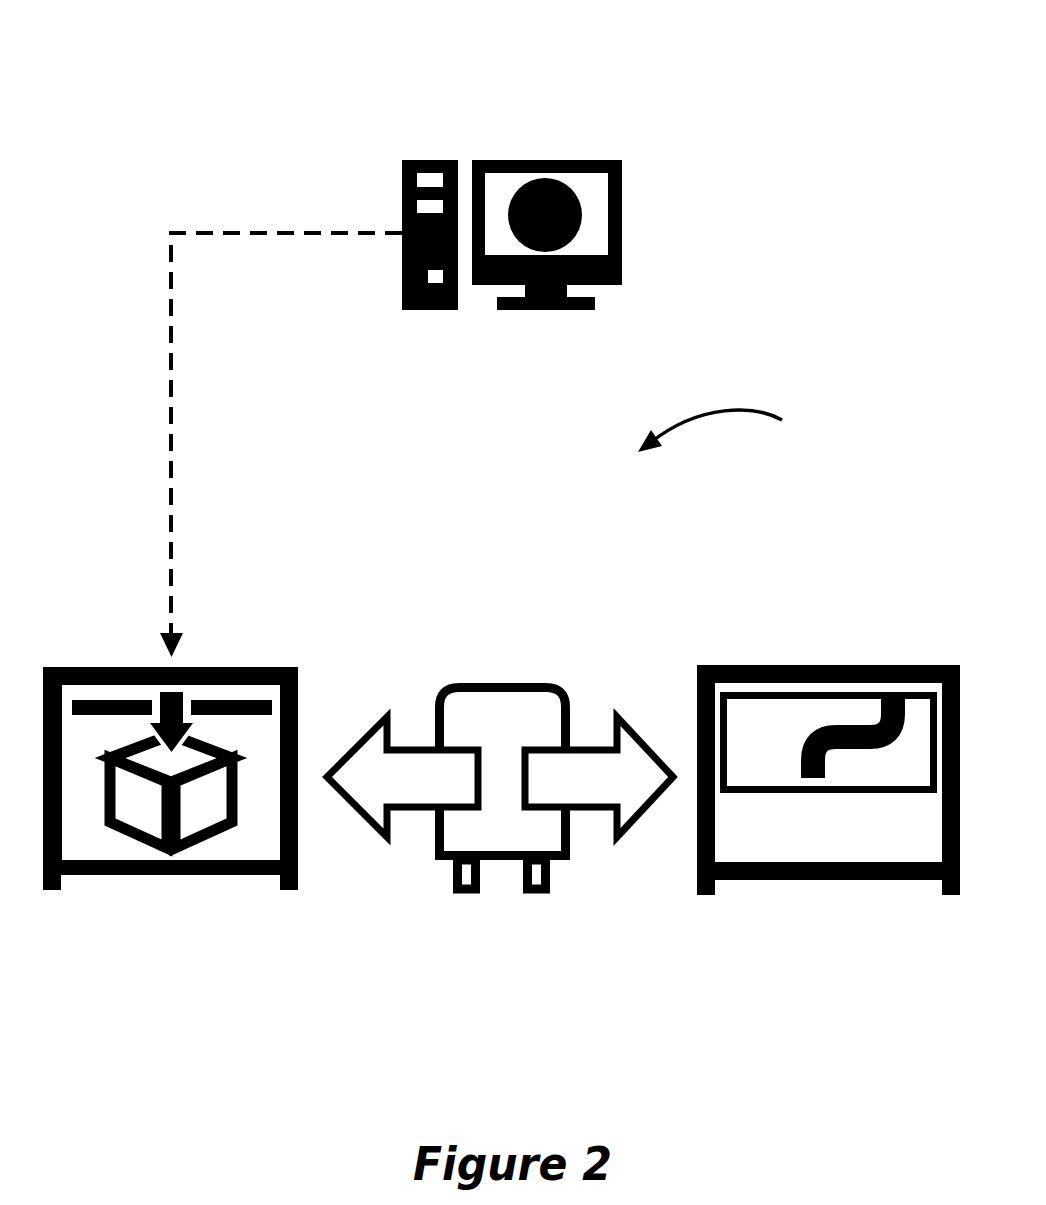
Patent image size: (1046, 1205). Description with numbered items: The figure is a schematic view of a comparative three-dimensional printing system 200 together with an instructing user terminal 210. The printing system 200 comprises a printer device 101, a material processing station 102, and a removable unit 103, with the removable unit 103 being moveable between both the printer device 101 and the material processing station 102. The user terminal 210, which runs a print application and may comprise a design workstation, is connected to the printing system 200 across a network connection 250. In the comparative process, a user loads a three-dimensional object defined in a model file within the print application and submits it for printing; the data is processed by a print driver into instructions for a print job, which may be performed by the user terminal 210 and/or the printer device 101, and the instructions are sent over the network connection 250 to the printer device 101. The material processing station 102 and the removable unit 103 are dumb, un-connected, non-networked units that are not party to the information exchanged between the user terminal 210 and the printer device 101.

The user terminal 210 is at (523, 160).
The network connection 250 is at (217, 233).
The 3D printing system 200 is at (750, 426).
The printer device 101 is at (233, 667).
The removable unit 103 is at (502, 683).
The material processing station 102 is at (813, 665).